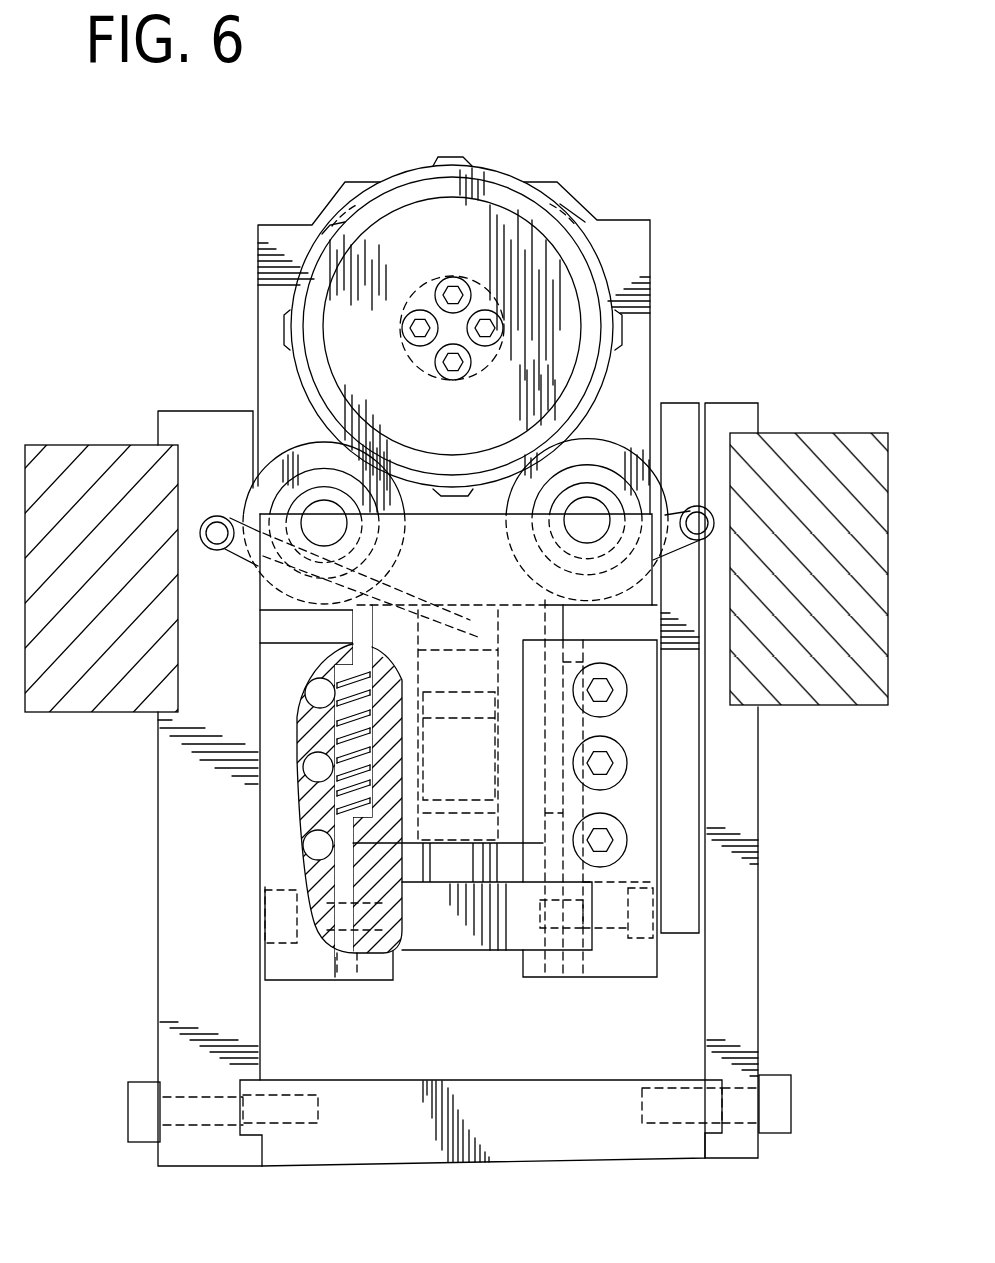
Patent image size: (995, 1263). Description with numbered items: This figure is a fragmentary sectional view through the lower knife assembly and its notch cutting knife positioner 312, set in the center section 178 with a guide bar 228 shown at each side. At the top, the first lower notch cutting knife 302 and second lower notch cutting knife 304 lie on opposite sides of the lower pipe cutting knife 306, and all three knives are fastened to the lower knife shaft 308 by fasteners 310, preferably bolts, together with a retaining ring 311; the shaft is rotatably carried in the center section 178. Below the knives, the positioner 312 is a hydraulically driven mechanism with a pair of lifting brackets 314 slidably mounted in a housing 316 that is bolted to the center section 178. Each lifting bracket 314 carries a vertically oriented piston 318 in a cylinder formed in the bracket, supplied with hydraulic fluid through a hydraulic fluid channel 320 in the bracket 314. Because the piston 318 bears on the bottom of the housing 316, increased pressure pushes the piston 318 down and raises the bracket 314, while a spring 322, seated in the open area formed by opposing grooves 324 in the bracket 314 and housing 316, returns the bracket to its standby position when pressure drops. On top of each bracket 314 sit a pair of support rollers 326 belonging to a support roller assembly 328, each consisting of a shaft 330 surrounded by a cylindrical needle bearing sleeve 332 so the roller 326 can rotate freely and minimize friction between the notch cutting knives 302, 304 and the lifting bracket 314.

The center section 178 is at (635, 252).
The guide bars 228 is at (100, 448).
The first lower notch cutting knife 302 is at (460, 152).
The second lower notch cutting knife 304 is at (365, 200).
The lower pipe cutting knife 306 is at (412, 175).
The lower knife shaft 308 is at (492, 286).
The fasteners 310 is at (416, 318).
The retaining ring 311 is at (550, 272).
The notch cutting knife positioner 312 is at (403, 1050).
The lifting brackets 314 is at (447, 547).
The housing 316 is at (640, 862).
The piston 318 is at (447, 863).
The hydraulic fluid channel 320 is at (357, 610).
The spring 322 is at (337, 717).
The opposing grooves 324 is at (362, 750).
The support rollers 326 is at (285, 460).
The support roller assembly 328 is at (290, 412).
The shaft 330 is at (337, 530).
The needle bearing sleeve 332 is at (297, 508).